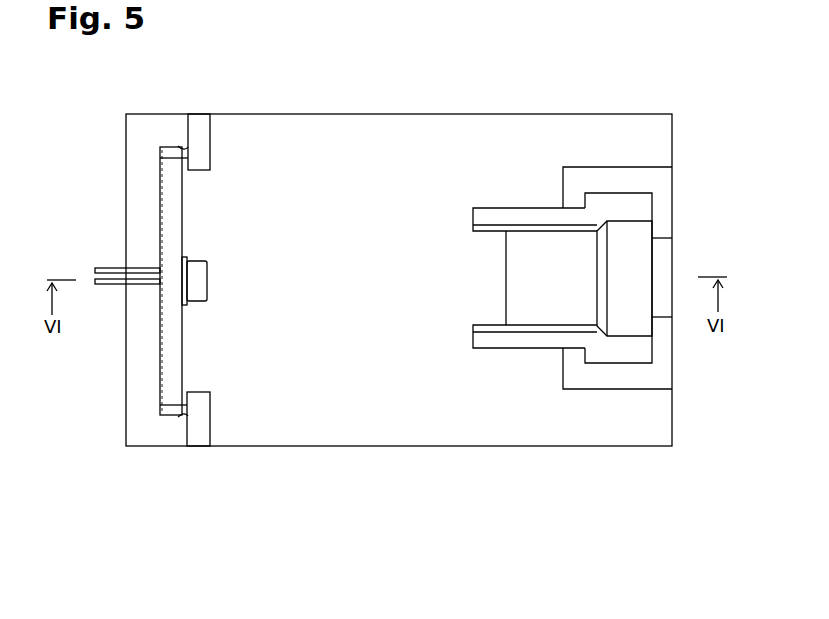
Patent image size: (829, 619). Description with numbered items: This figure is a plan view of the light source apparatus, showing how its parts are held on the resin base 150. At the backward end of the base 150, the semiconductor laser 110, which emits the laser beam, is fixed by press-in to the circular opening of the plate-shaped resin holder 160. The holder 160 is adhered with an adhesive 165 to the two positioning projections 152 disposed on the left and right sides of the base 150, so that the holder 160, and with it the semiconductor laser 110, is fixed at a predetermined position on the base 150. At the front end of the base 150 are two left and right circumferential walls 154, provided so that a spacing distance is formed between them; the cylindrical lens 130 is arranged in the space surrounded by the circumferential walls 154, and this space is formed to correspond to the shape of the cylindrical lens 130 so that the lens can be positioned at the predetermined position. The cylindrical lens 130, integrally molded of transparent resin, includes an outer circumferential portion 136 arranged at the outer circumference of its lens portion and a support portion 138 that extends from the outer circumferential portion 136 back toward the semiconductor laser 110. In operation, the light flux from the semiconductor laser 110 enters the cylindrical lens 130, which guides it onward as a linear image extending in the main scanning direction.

The semiconductor laser 110 is at (195, 272).
The cylindrical lens 130 is at (628, 215).
The outer circumferential portion 136 is at (630, 268).
The support portion 138 is at (541, 300).
The base 150 is at (335, 446).
The positioning projection 152 is at (199, 127).
The circumferential wall 154 is at (611, 183).
The holder 160 is at (165, 348).
The adhesive 165 is at (183, 146).